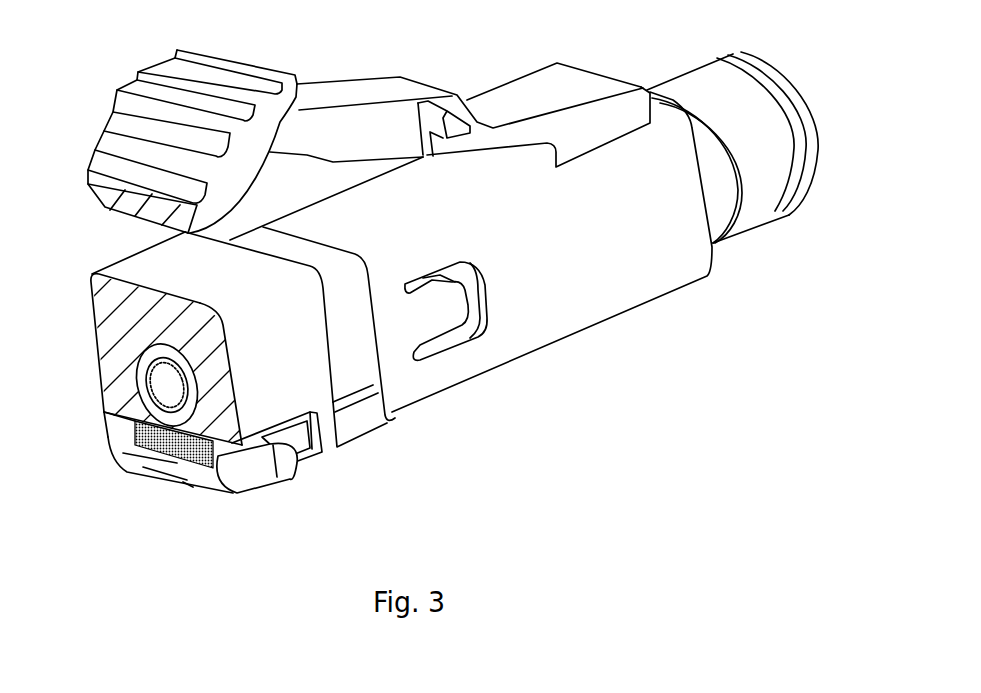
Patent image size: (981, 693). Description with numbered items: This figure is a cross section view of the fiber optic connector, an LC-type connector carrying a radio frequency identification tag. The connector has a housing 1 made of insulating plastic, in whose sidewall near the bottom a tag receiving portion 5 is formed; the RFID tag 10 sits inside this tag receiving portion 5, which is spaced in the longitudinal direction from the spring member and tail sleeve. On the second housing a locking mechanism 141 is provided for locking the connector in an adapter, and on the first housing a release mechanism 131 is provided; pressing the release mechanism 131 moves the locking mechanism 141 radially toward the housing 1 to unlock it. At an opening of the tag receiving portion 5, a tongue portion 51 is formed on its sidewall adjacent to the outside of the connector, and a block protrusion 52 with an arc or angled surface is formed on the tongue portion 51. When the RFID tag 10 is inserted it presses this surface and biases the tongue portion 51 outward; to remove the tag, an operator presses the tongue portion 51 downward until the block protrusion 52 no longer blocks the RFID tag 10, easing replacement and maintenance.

The housing 1 is at (128, 262).
The tag receiving portion 5 is at (102, 436).
The RFID tag 10 is at (168, 462).
The tongue portion 51 is at (253, 475).
The block protrusion 52 is at (222, 468).
The release mechanism 131 is at (122, 146).
The locking mechanism 141 is at (352, 95).